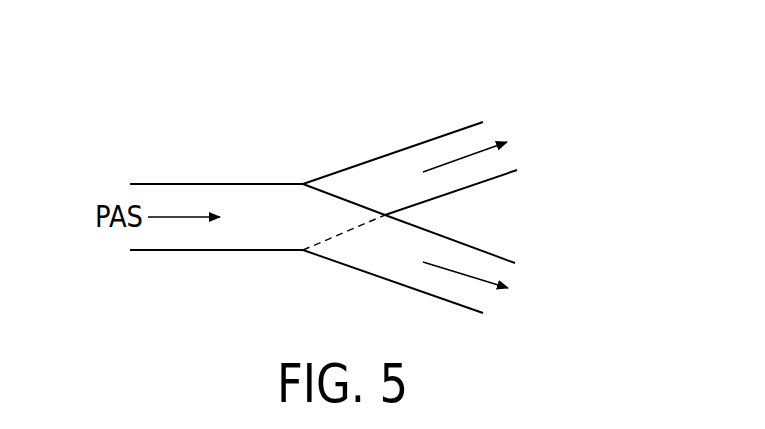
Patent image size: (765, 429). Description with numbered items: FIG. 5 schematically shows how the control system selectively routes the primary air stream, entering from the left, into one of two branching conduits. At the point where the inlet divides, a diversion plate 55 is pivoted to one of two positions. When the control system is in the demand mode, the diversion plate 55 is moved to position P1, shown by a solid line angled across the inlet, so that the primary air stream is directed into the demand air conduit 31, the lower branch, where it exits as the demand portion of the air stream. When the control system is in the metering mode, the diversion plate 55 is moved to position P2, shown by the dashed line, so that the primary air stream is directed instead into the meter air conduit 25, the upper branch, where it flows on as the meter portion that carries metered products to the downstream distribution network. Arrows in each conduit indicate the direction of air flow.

The meter air conduit 25 is at (417, 143).
The demand air conduit 31 is at (420, 292).
The diversion plate 55 is at (332, 194).
The position P1 is at (350, 203).
The position P2 is at (353, 230).